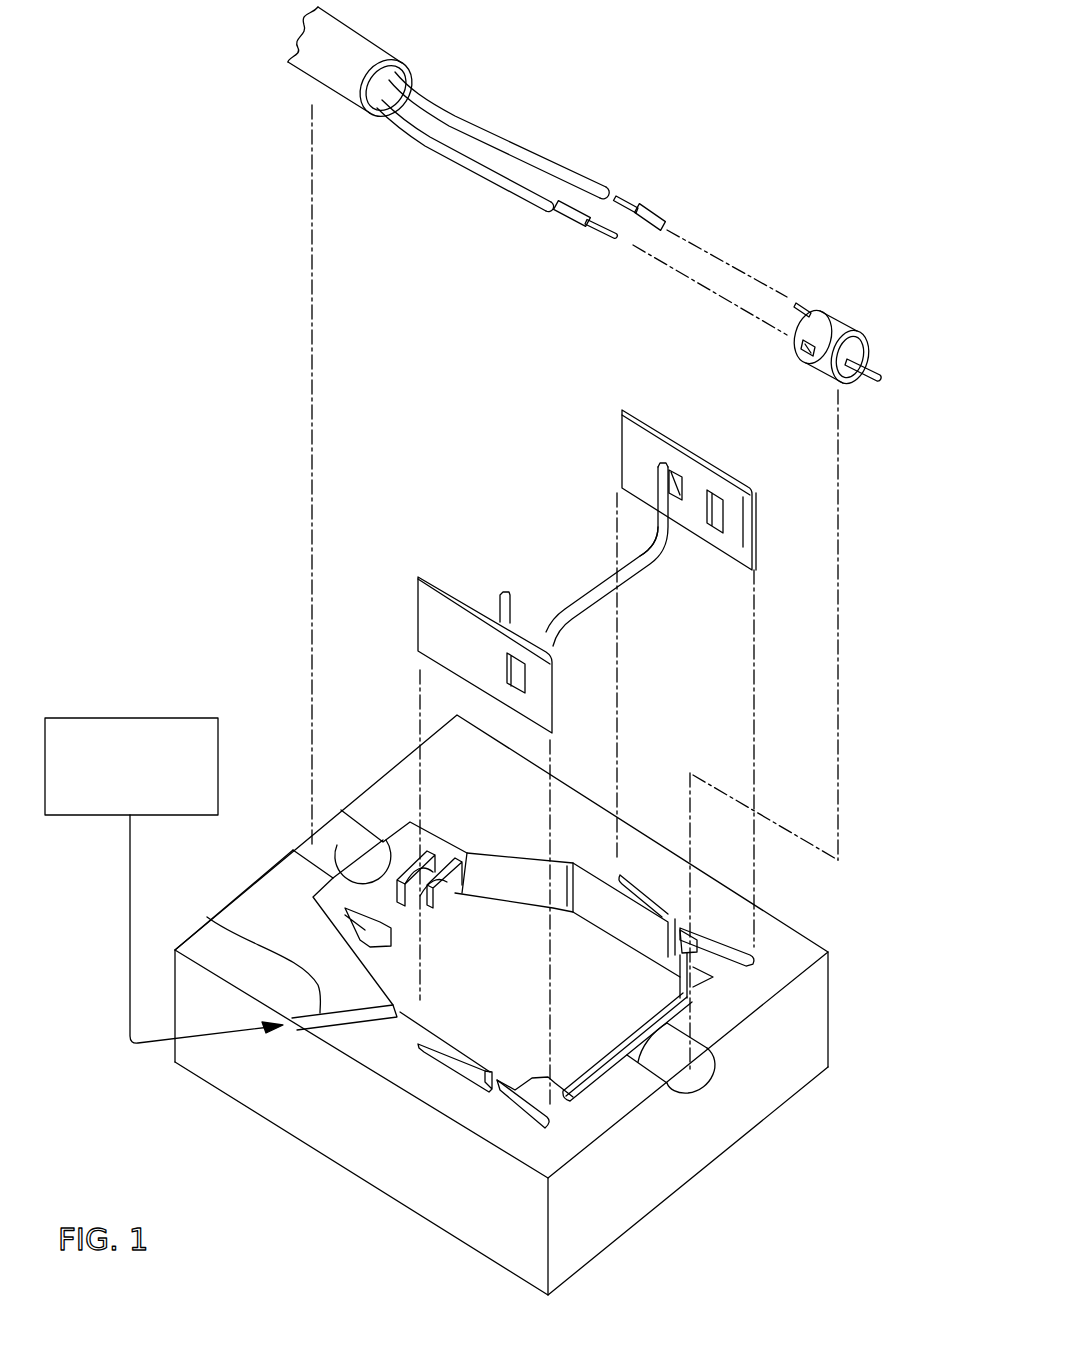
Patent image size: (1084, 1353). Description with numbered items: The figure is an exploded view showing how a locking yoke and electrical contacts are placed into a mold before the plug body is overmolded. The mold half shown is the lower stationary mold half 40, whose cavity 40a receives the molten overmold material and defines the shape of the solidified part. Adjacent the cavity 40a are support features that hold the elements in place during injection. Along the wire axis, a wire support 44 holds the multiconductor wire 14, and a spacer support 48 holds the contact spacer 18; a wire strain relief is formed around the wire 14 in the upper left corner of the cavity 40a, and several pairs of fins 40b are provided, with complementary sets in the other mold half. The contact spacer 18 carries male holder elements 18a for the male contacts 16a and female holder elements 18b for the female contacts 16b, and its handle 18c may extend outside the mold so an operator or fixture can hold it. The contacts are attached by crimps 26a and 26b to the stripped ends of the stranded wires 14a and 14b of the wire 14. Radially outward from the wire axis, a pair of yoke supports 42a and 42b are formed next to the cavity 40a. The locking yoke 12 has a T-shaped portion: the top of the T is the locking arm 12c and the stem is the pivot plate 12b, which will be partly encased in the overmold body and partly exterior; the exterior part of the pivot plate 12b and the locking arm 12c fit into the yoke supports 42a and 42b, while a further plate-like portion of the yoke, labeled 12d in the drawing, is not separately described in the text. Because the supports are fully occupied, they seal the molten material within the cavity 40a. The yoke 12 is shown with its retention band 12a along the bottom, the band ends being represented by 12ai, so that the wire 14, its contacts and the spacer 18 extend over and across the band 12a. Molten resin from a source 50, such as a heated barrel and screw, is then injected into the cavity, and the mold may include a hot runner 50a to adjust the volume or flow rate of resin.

The locking yoke 12 is at (606, 434).
The retention band 12a is at (560, 637).
The band end 12ai is at (663, 497).
The pivot plate 12b is at (683, 503).
The locking arm 12c is at (712, 480).
The lower terminal plate 12d is at (507, 678).
The multiconductor wire 14 is at (322, 65).
The stranded wire 14a is at (530, 147).
The stranded wire 14b is at (467, 167).
The male contact 16a is at (600, 233).
The female contact 16b is at (655, 208).
The contact spacer 18 is at (842, 323).
The male holder element 18a is at (787, 337).
The female holder element 18b is at (812, 310).
The handle 18c is at (877, 360).
The crimp 26a is at (573, 213).
The crimp 26b is at (623, 192).
The lower stationary mold half 40 is at (657, 1150).
The cavity 40a is at (494, 995).
The fins 40b is at (418, 858).
The yoke support 42a is at (722, 940).
The yoke support 42b is at (510, 1108).
The wire support 44 is at (343, 853).
The spacer support 48 is at (710, 1045).
The source of molten resin 50 is at (146, 811).
The hot runner 50a is at (207, 917).